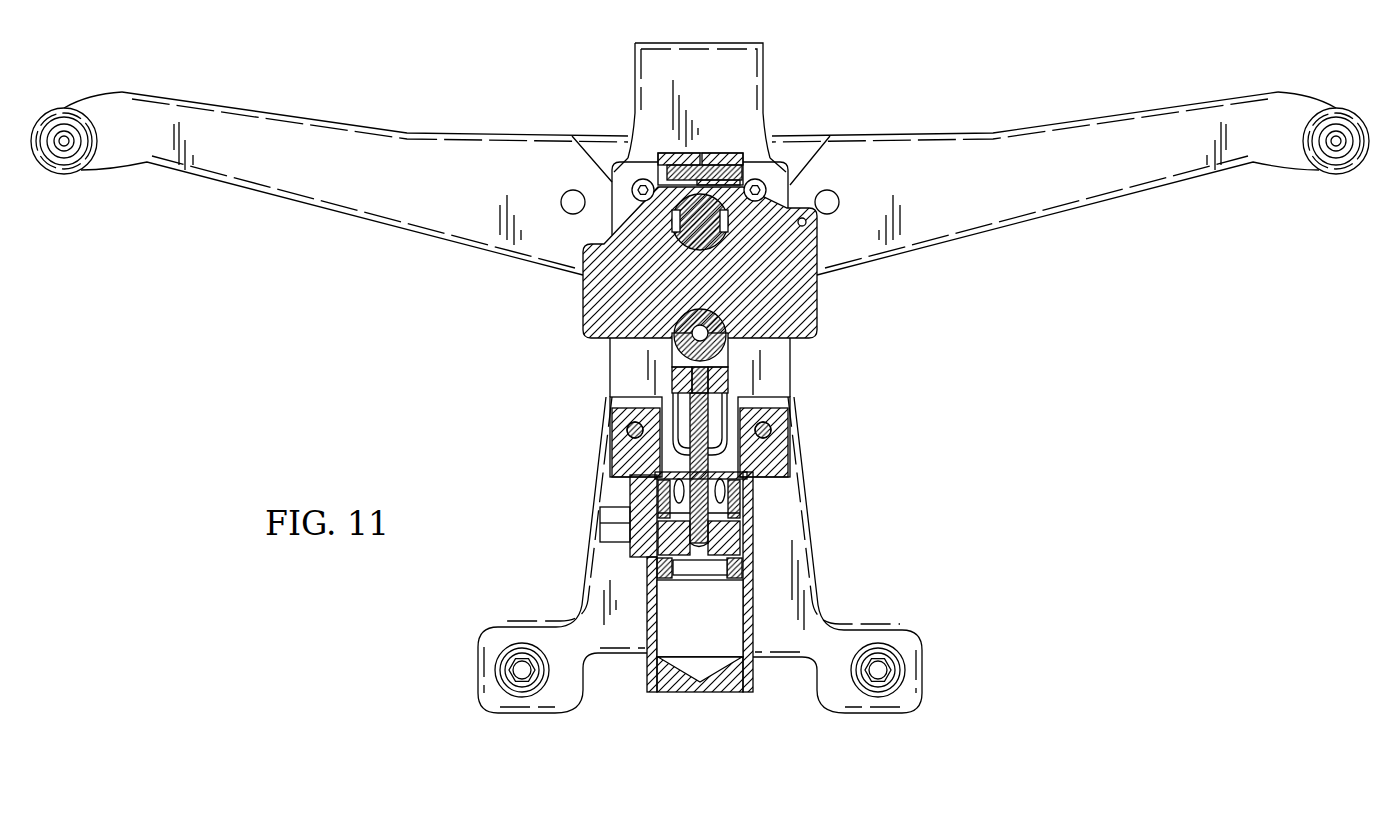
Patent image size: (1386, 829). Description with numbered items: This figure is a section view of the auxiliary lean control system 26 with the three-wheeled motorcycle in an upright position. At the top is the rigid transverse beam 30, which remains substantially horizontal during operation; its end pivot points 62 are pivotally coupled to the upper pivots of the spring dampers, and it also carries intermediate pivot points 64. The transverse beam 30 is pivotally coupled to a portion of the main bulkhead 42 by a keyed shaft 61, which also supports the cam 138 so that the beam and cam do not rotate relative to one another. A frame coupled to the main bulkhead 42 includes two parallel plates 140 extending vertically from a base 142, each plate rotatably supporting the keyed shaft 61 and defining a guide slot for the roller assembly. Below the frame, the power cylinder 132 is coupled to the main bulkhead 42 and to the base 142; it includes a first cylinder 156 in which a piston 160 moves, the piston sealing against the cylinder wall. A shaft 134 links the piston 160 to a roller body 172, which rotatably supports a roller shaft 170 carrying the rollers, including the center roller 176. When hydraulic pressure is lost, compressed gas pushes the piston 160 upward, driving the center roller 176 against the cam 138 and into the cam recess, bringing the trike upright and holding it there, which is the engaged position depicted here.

The auxiliary lean control system 26 is at (757, 737).
The transverse beam 30 is at (1078, 140).
The main bulkhead 42 is at (563, 687).
The keyed shaft 61 is at (722, 196).
The end pivot points 62 is at (75, 143).
The intermediate pivot points 64 is at (573, 190).
The power cylinder 132 is at (745, 525).
The shaft 134 is at (665, 473).
The cam 138 is at (600, 290).
The plates 140 is at (630, 368).
The base 142 is at (780, 462).
The first cylinder 156 is at (707, 640).
The piston 160 is at (663, 548).
The roller shaft 170 is at (673, 342).
The roller body 172 is at (724, 360).
The center roller 176 is at (675, 337).